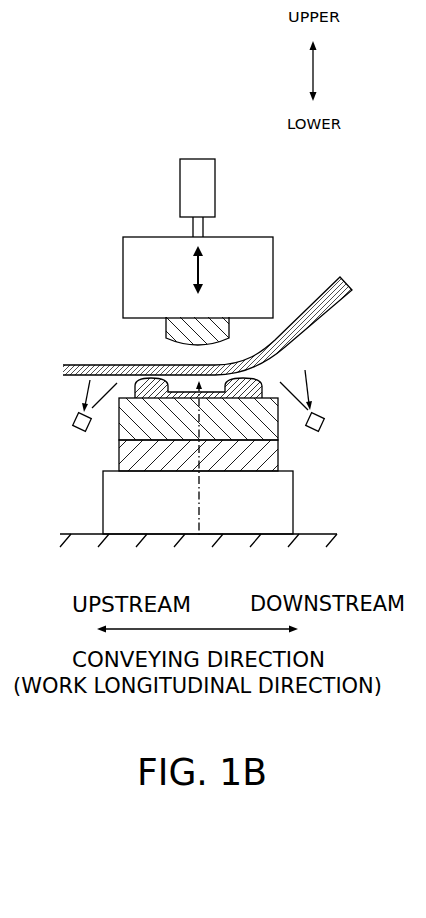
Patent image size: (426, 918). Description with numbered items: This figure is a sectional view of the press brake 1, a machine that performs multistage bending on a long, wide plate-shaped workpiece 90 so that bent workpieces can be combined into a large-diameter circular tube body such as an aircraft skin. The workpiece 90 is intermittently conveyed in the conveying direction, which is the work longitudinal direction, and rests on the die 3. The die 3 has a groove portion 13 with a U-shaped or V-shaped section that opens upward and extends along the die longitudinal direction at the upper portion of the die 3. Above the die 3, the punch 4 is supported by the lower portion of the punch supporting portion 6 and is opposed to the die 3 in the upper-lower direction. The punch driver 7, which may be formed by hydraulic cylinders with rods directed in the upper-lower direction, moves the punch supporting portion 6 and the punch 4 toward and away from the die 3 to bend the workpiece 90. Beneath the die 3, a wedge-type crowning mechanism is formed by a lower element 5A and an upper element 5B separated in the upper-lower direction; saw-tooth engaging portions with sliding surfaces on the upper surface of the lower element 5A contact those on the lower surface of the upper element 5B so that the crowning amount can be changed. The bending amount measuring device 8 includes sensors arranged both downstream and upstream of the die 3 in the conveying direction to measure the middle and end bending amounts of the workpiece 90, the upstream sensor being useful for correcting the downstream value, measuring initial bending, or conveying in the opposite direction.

The press brake 1 is at (167, 116).
The punch driver 7 is at (183, 172).
The punch supporting portion 6 is at (125, 256).
The punch 4 is at (165, 326).
The die 3 is at (132, 392).
The workpiece 90 is at (78, 362).
The bending amount measuring device 8 is at (72, 432).
The upper element 5B is at (127, 405).
The lower element 5A is at (122, 447).
The groove portion 13 is at (199, 537).